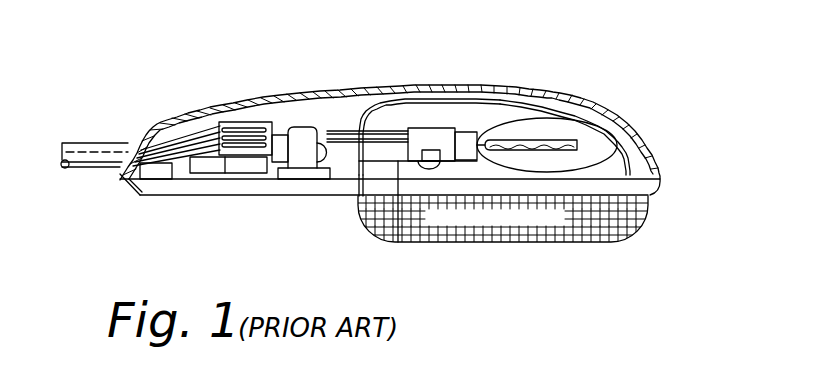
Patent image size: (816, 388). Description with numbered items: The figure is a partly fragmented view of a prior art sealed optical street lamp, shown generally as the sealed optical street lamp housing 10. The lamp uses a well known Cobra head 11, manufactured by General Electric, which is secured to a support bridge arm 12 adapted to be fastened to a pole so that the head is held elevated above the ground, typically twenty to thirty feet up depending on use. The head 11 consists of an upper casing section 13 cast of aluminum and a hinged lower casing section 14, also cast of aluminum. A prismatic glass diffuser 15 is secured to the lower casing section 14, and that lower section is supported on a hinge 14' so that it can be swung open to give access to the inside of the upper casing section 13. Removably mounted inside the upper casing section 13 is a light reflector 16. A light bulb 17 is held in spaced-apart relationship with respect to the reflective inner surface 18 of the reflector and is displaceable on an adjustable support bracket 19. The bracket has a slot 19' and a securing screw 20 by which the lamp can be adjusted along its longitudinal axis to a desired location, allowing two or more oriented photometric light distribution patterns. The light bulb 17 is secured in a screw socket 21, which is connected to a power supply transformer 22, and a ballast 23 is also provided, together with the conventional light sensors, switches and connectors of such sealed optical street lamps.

The sealed optical street lamp housing 10 is at (205, 86).
The Cobra head 11 is at (583, 87).
The support bridge arm 12 is at (107, 157).
The upper casing section 13 is at (483, 90).
The lower casing section 14 is at (388, 206).
The hinge 14' is at (111, 202).
The prismatic glass diffuser 15 is at (443, 217).
The light reflector 16 is at (630, 148).
The light bulb 17 is at (585, 150).
The reflective inner surface 18 is at (392, 118).
The adjustable support bracket 19 is at (314, 210).
The slot 19' is at (362, 208).
The securing screw 20 is at (431, 170).
The screw socket 21 is at (427, 135).
The power supply transformer 22 is at (303, 150).
The ballast 23 is at (207, 163).